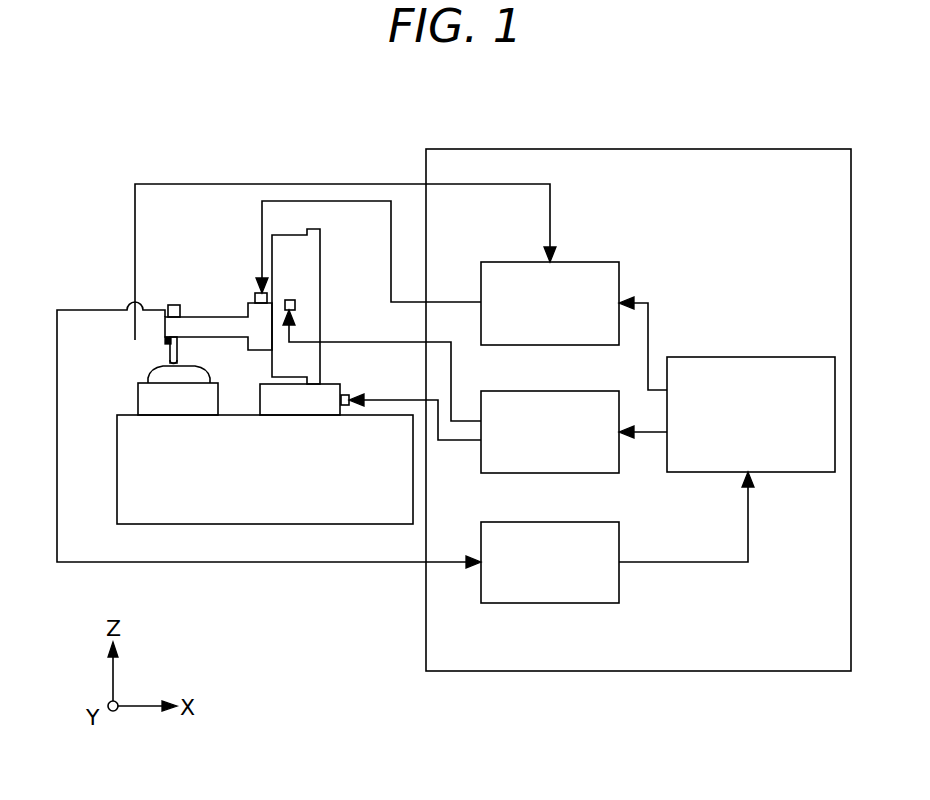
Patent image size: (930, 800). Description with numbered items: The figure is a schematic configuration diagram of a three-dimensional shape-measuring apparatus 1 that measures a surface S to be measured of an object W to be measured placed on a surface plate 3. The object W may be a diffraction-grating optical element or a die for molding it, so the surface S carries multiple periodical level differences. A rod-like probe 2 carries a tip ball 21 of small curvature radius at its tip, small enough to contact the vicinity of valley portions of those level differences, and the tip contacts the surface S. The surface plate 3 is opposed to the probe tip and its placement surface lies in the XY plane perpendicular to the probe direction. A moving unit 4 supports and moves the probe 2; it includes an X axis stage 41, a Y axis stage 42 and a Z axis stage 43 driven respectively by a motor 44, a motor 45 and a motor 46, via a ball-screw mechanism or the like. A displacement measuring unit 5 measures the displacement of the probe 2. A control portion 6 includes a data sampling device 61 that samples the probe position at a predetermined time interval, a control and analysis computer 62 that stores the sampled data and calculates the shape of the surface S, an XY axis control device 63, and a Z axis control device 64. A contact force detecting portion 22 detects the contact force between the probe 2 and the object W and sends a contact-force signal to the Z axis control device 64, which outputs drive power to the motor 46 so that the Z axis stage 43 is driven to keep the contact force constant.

The shape-measuring apparatus 1 is at (472, 138).
The probe 2 is at (171, 350).
The surface plate 3 is at (178, 422).
The moving unit 4 is at (222, 207).
The displacement measuring unit 5 is at (173, 305).
The control portion 6 is at (771, 149).
The tip ball 21 is at (172, 363).
The contact force detecting portion 22 is at (165, 340).
The X axis stage 41 is at (296, 422).
The Y axis stage 42 is at (305, 253).
The Z axis stage 43 is at (203, 317).
The motor 44 is at (350, 393).
The motor 45 is at (295, 305).
The motor 46 is at (255, 298).
The data sampling device 61 is at (506, 522).
The control and analysis computer 62 is at (778, 357).
The XY axis control device 63 is at (506, 391).
The Z axis control device 64 is at (506, 262).
The object to be measured W is at (160, 396).
The surface to be measured S is at (190, 366).